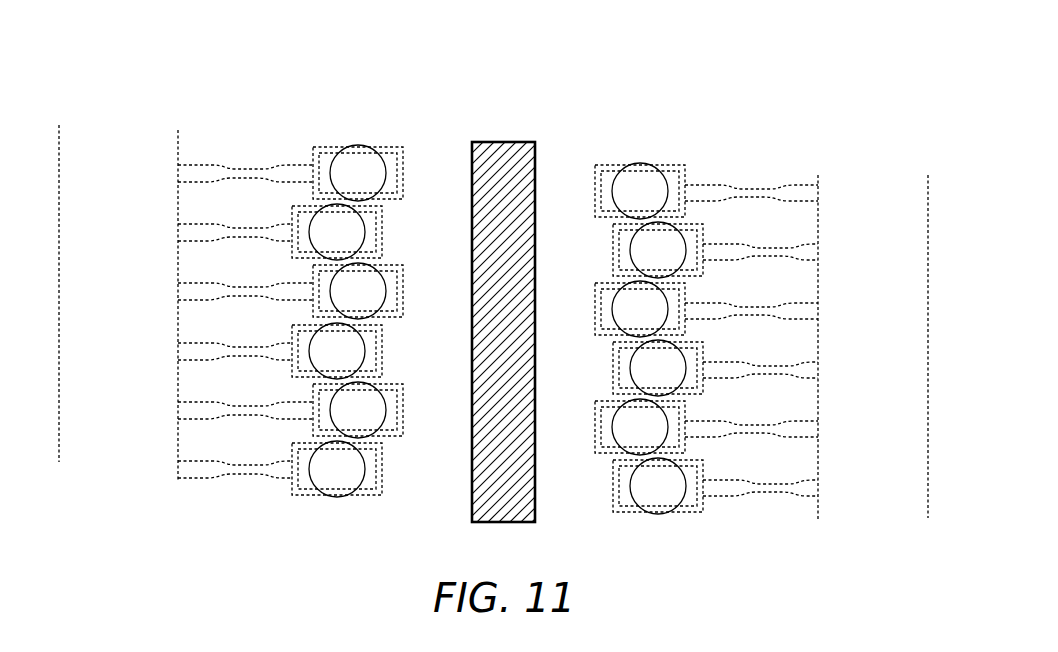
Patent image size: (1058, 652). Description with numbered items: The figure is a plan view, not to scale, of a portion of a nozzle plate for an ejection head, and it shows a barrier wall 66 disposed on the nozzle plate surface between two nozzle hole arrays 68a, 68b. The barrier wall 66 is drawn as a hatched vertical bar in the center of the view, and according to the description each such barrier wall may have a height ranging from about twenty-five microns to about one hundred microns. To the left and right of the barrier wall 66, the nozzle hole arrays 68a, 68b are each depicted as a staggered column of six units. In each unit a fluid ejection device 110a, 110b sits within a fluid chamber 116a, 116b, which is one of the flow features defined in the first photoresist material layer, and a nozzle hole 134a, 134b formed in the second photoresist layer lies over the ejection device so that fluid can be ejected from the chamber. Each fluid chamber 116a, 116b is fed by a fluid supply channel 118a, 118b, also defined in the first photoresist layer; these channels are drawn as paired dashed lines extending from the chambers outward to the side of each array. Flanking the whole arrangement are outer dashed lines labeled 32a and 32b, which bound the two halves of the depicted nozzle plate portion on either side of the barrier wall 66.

The first side wall 32a is at (140, 271).
The second side wall 32b is at (888, 300).
The barrier wall 66 is at (503, 153).
The nozzle hole array 68a is at (306, 309).
The nozzle hole array 68b is at (701, 325).
The fluid ejection device 110a is at (388, 158).
The fluid ejection device 110b is at (608, 177).
The fluid chamber 116a is at (323, 150).
The fluid chamber 116b is at (668, 167).
The fluid supply channel 118a is at (213, 173).
The fluid supply channel 118b is at (782, 192).
The nozzle hole 134a is at (328, 497).
The nozzle hole 134b is at (665, 513).